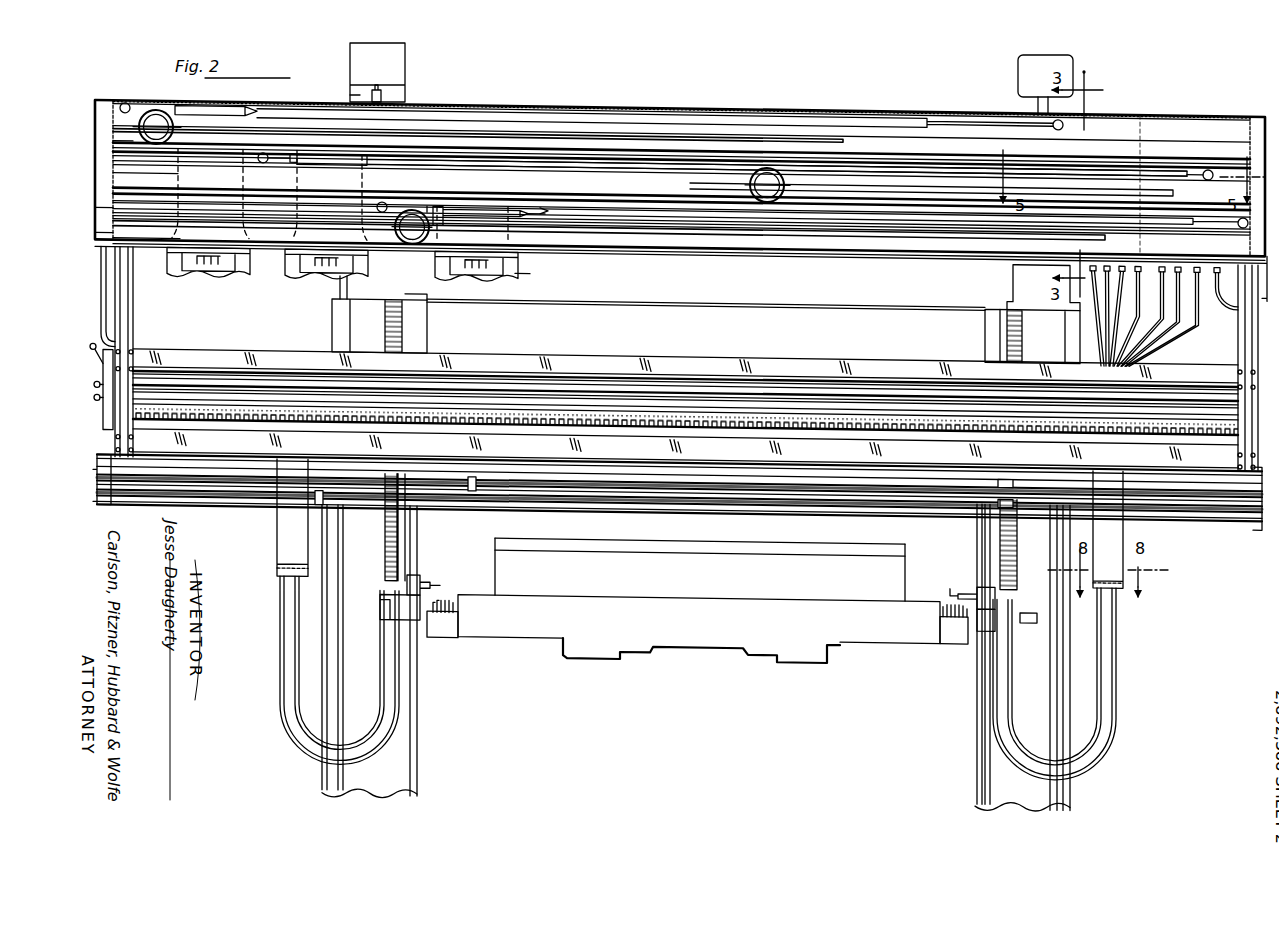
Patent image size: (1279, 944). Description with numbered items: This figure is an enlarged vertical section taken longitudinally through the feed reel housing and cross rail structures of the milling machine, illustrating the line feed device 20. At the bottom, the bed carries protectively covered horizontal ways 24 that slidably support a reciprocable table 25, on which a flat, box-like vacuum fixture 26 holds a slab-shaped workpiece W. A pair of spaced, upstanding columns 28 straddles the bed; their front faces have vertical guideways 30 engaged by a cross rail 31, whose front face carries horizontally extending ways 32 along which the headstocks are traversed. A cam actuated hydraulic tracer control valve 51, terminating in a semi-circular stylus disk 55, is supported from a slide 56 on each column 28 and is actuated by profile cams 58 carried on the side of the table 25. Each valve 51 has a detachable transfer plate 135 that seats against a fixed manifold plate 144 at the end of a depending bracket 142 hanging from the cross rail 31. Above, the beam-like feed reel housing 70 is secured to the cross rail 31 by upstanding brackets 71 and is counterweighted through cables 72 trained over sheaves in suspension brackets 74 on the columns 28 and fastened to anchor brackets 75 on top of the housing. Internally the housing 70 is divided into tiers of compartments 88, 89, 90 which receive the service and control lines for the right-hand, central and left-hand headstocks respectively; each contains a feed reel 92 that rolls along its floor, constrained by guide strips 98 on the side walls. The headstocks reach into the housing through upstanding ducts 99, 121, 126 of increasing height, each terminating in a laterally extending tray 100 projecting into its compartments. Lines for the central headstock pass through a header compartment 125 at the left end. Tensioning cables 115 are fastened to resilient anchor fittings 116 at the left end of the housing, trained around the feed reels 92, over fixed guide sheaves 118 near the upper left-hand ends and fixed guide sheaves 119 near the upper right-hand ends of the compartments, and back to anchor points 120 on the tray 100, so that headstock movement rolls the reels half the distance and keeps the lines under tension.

The line feed device 20 is at (1197, 116).
The feed reel housing 70 is at (702, 109).
The compartment 90 is at (1146, 126).
The tray 100 is at (223, 109).
The anchor points 120 is at (547, 204).
The fixed guide sheaves 118 is at (126, 102).
The feed reel 92 is at (160, 110).
The guide strips 98 is at (845, 142).
The compartment 89 is at (1145, 184).
The compartment 88 is at (1163, 238).
The fixed guide sheaves 119 is at (1243, 228).
The tensioning cables 115 is at (133, 143).
The duct 126 is at (176, 173).
The header compartment 125 is at (110, 209).
The resilient anchor fittings 116 is at (108, 234).
The duct 121 is at (300, 214).
The duct 99 is at (428, 205).
The suspension brackets 74 is at (405, 62).
The counterweight cables 72 is at (378, 89).
The anchor brackets 75 is at (357, 94).
The transfer plate 135 is at (213, 269).
The upstanding brackets 71 is at (135, 306).
The vertical guideways 30 is at (335, 330).
The cross rail 31 is at (706, 357).
The horizontally extending ways 32 is at (608, 363).
The depending brackets 142 is at (283, 525).
The fixed manifold plate 144 is at (283, 568).
The upstanding columns 28 is at (418, 657).
The tracer control valve 51 is at (414, 576).
The stylus disk 55 is at (445, 598).
The profile cams 58 is at (452, 604).
The slide 56 is at (383, 615).
The workpiece W is at (708, 544).
The vacuum fixture 26 is at (905, 572).
The table 25 is at (528, 638).
The horizontal ways 24 is at (598, 656).